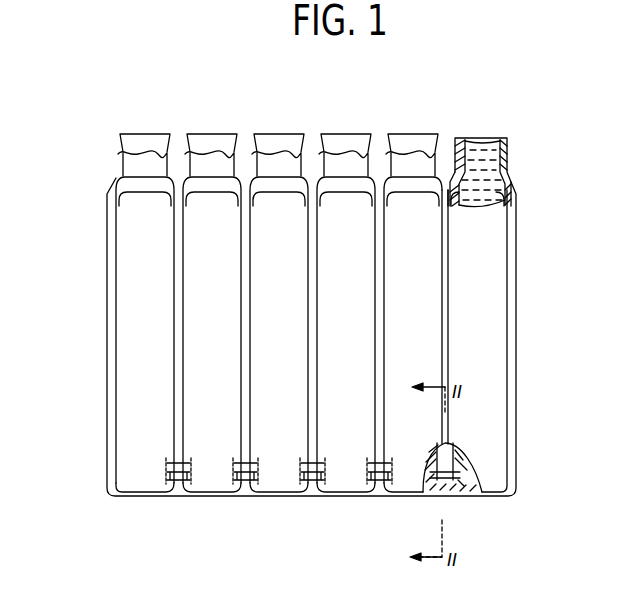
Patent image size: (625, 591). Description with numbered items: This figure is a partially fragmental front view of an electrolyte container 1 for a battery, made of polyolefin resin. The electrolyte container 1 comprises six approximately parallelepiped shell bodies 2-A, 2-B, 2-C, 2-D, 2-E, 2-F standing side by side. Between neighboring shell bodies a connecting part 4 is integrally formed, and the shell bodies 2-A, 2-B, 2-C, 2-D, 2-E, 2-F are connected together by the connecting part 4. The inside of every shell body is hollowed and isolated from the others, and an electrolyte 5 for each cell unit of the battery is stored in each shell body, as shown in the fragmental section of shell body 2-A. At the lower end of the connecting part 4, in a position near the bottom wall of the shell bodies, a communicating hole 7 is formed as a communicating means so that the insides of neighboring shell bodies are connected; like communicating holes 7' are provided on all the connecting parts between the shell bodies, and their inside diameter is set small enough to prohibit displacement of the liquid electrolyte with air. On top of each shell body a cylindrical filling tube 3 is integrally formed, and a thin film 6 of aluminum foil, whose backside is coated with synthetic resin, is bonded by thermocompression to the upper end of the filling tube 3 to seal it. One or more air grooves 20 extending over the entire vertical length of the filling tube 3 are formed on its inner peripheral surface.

The electrolyte container 1 is at (95, 340).
The shell body 2-A is at (485, 392).
The shell body 2-B is at (400, 487).
The shell body 2-C is at (337, 487).
The shell body 2-D is at (273, 487).
The shell body 2-E is at (203, 487).
The shell body 2-F is at (133, 487).
The filling tube 3 is at (498, 167).
The connecting part 4 is at (443, 322).
The electrolyte 5 is at (488, 200).
The thin film 6 is at (147, 133).
The communicating hole 7 is at (453, 484).
The valve 7' is at (273, 491).
The air groove 20 is at (460, 158).